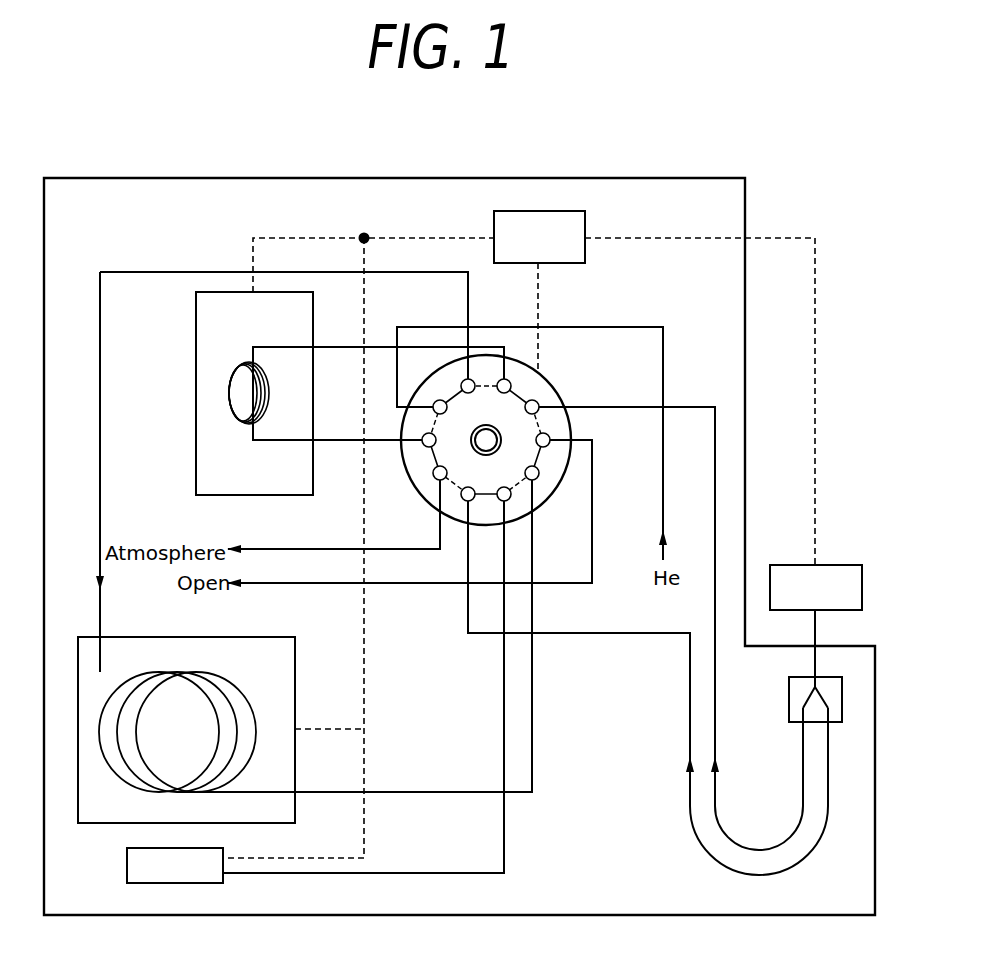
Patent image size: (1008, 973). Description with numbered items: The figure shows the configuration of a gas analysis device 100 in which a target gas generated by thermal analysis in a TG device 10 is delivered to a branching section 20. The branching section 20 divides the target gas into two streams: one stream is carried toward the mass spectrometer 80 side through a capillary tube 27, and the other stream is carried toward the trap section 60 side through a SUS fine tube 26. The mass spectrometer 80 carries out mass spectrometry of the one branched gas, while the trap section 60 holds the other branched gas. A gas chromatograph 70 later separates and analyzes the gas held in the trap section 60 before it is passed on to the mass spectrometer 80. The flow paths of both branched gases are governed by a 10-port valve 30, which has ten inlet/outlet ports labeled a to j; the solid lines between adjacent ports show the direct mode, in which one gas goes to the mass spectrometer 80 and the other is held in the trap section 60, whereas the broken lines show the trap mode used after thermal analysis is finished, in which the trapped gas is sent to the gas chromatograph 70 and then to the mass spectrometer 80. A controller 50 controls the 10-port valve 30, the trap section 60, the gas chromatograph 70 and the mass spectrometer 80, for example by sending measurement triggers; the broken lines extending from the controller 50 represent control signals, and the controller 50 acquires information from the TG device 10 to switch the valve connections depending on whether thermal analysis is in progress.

The gas analysis device 100 is at (698, 178).
The TG device 10 is at (835, 565).
The branching section 20 is at (789, 692).
The SUS fine tube 26 is at (737, 838).
The capillary tube 27 is at (703, 858).
The 10-port valve 30 is at (553, 383).
The controller 50 is at (585, 222).
The trap section 60 is at (196, 318).
The gas chromatograph 70 is at (255, 637).
The mass spectrometer 80 is at (127, 862).